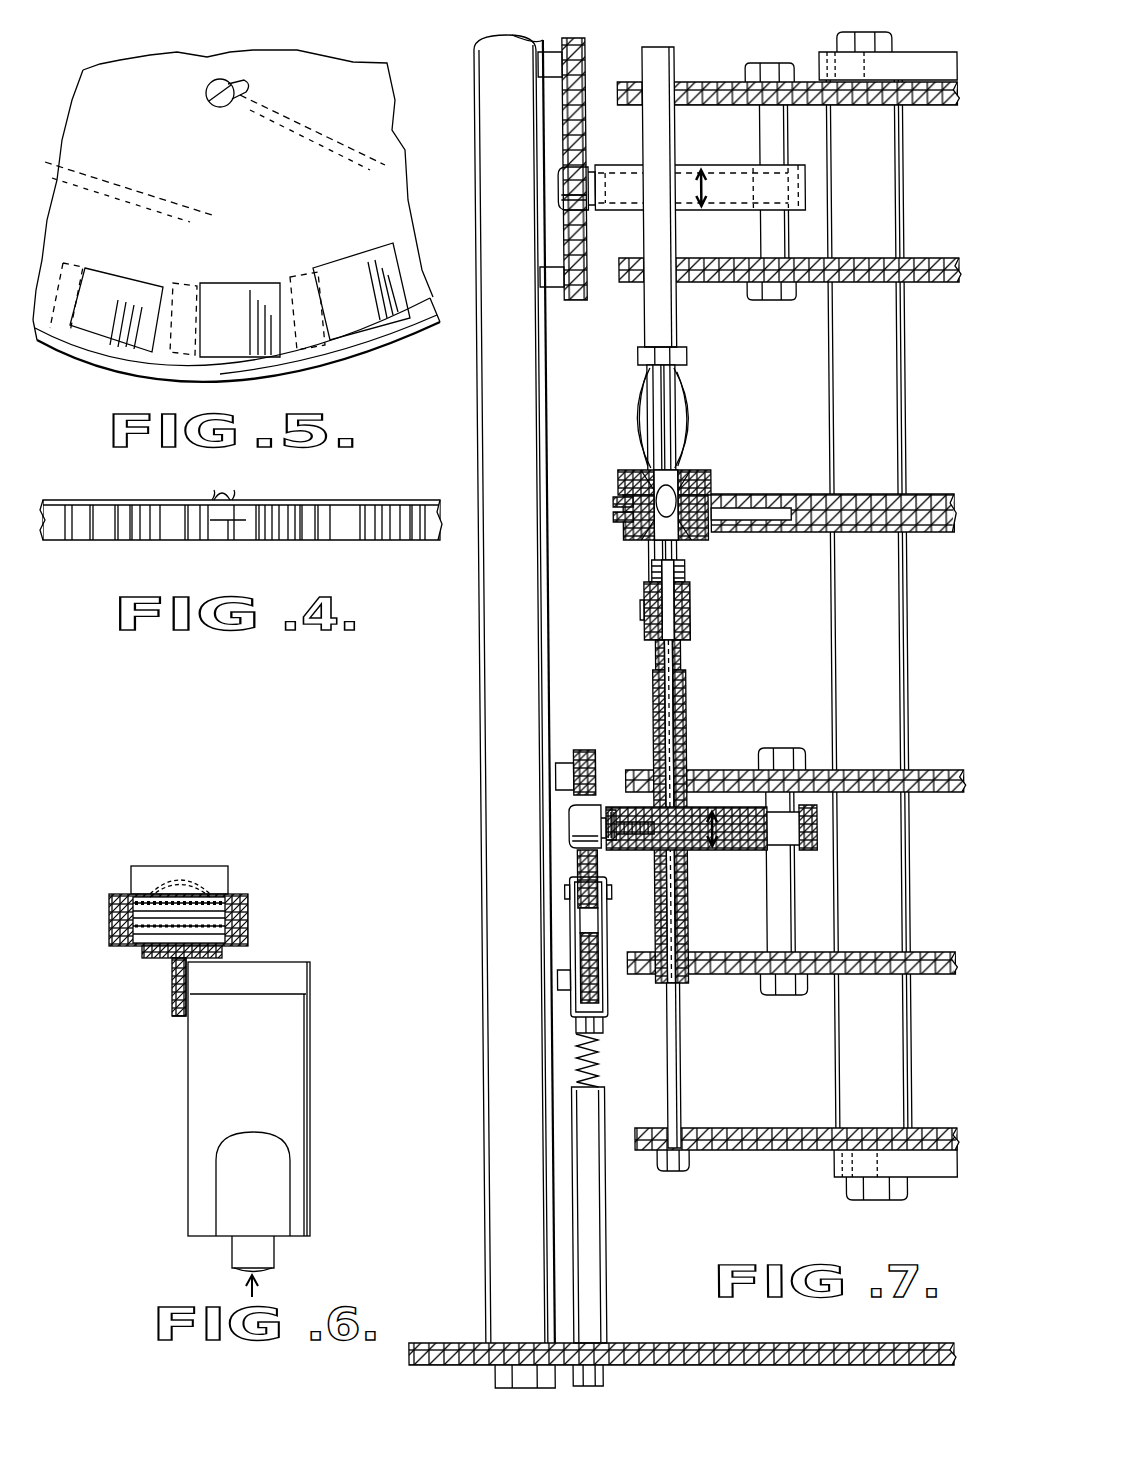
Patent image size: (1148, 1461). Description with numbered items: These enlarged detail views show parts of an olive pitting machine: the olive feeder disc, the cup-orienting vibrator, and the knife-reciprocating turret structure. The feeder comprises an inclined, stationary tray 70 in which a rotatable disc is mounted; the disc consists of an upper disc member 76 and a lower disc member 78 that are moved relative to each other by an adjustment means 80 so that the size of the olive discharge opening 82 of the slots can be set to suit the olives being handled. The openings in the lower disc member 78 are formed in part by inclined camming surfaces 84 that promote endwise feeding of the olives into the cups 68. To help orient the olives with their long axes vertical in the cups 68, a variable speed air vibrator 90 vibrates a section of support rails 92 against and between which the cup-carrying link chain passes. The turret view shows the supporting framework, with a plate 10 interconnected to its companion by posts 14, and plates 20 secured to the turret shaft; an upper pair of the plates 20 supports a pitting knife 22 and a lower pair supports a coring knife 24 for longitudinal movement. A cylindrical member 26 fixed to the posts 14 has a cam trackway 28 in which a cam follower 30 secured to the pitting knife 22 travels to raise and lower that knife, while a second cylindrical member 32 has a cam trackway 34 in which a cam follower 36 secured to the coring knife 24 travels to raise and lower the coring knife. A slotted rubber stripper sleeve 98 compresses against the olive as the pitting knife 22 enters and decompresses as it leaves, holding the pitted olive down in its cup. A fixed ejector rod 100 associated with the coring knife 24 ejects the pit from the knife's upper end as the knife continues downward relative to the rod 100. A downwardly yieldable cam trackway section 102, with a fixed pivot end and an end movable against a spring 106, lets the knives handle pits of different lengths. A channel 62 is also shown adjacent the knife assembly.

In FIG. 7, the plate 10 is at (630, 1343).
In FIG. 7, the posts 14 is at (480, 1145).
In FIG. 7, the plates 20 is at (937, 105).
In FIG. 7, the pitting knives 22 is at (675, 440).
In FIG. 7, the coring knives 24 is at (690, 555).
In FIG. 7, the cylindrical member 26 is at (588, 65).
In FIG. 7, the cam trackway 28 is at (563, 180).
In FIG. 7, the cam followers 30 is at (562, 200).
In FIG. 7, the cylindrical member 32 is at (585, 750).
In FIG. 7, the cam trackway 34 is at (570, 793).
In FIG. 7, the cam followers 36 is at (565, 830).
In FIG. 7, the channel 62 is at (783, 532).
In FIG. 6, the cups 68 is at (230, 872).
In FIG. 7, the cups 68 is at (712, 475).
In FIG. 5, the tray 70 is at (376, 345).
In FIG. 5, the upper disc member 76 is at (305, 227).
In FIG. 4, the upper disc member 76 is at (318, 500).
In FIG. 4, the lower disc member 78 is at (388, 540).
In FIG. 5, the adjustment means 80 is at (224, 108).
In FIG. 4, the olive discharge opening 82 is at (225, 540).
In FIG. 5, the camming surfaces 84 is at (252, 313).
In FIG. 4, the camming surfaces 84 is at (248, 500).
In FIG. 6, the air vibrator 90 is at (316, 1122).
In FIG. 6, the support rails 92 is at (250, 925).
In FIG. 7, the stripper sleeves 98 is at (688, 405).
In FIG. 7, the ejector rod 100 is at (672, 1088).
In FIG. 7, the cam trackway section 102 is at (578, 862).
In FIG. 7, the spring 106 is at (570, 1060).